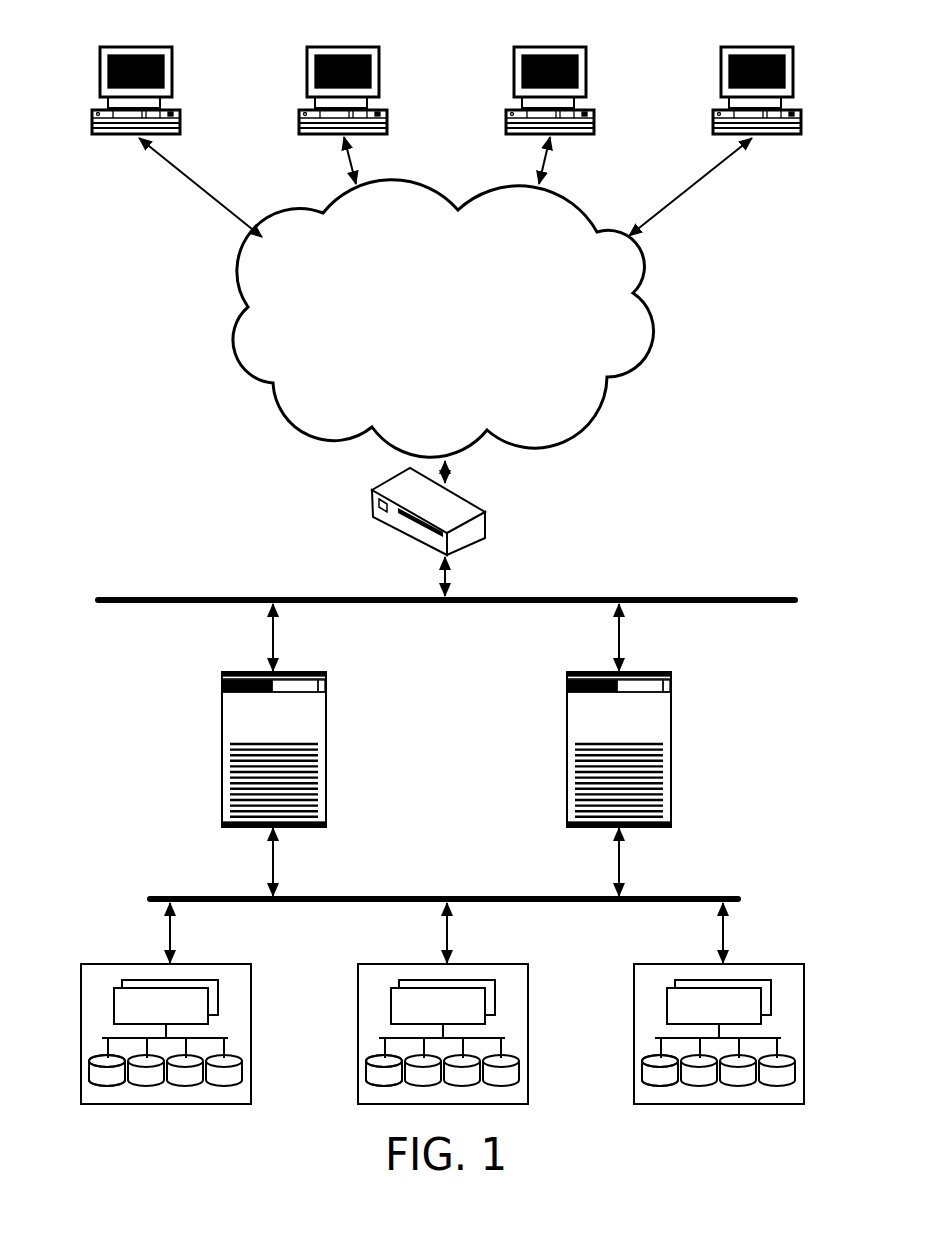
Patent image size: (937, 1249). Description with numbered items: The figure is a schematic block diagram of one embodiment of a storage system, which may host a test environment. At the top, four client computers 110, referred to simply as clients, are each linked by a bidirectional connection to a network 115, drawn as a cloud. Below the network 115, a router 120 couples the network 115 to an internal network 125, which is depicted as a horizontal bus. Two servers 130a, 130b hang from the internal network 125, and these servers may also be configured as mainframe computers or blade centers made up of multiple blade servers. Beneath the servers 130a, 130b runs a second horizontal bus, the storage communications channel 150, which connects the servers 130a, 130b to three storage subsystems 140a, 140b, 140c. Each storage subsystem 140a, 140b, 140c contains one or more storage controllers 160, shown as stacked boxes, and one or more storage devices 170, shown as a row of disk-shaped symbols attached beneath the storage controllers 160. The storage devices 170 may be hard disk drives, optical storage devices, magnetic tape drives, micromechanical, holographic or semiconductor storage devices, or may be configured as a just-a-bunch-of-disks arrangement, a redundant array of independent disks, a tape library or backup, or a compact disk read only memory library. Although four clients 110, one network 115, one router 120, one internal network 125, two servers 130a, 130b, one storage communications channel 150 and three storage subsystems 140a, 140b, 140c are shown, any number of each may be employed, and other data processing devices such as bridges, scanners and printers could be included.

The client computer 110 is at (172, 48).
The network 115 is at (455, 346).
The router 120 is at (485, 512).
The internal network 125 is at (120, 598).
The server 130a is at (326, 672).
The server 130b is at (671, 672).
The storage subsystem 140a is at (251, 964).
The storage subsystem 140b is at (528, 964).
The storage subsystem 140c is at (804, 964).
The storage communications channel 150 is at (377, 895).
The storage controller 160 is at (114, 1003).
The storage device 170 is at (89, 1074).